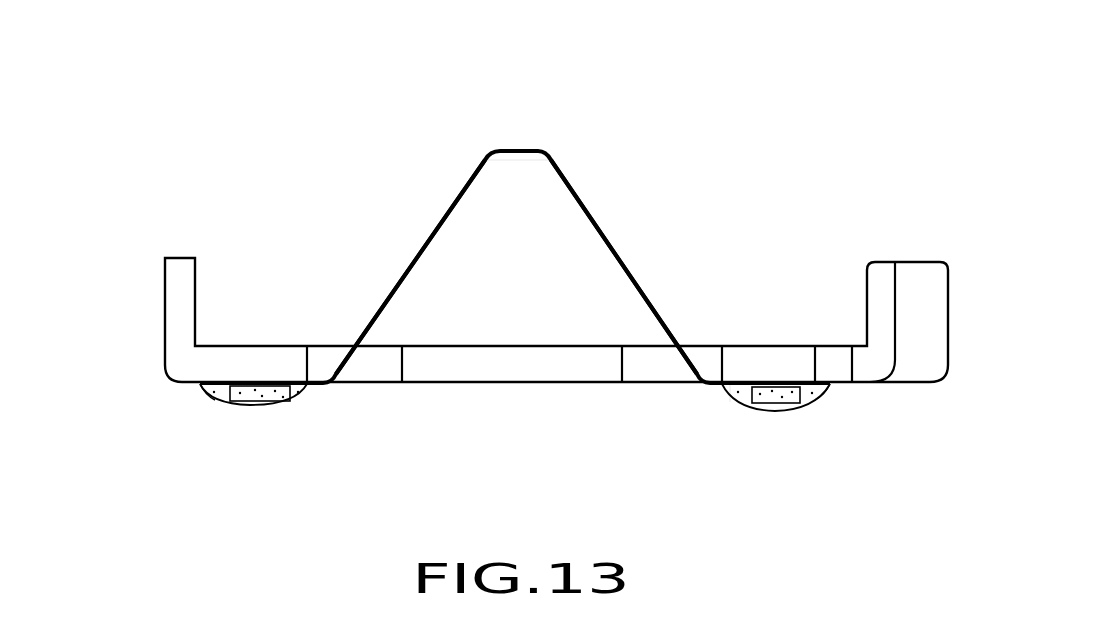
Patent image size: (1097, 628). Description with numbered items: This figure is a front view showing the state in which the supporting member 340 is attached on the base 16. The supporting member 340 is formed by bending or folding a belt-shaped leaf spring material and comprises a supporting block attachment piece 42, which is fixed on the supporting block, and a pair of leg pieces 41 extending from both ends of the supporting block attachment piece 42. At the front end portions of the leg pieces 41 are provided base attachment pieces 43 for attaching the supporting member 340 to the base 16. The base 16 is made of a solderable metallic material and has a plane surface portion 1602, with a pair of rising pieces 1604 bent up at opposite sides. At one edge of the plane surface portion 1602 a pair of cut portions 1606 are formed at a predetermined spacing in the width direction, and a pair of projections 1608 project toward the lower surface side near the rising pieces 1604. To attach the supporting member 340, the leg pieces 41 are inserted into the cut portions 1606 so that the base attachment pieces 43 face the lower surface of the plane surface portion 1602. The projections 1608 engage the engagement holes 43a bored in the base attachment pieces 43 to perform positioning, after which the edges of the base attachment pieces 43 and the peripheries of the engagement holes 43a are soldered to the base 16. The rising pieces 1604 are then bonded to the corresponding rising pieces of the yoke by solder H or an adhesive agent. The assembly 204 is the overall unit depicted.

The base 16 is at (500, 382).
The plane surface portion 1602 is at (690, 346).
The rising pieces 1604 is at (180, 292).
The cut portions 1606 is at (377, 382).
The projections 1608 is at (238, 404).
The supporting member 340 is at (424, 165).
The leg pieces 41 is at (446, 201).
The supporting block attachment piece 42 is at (532, 151).
The module 204 is at (662, 138).
The base attachment pieces 43 is at (205, 390).
The engagement holes 43a is at (218, 393).
The solder H is at (290, 398).